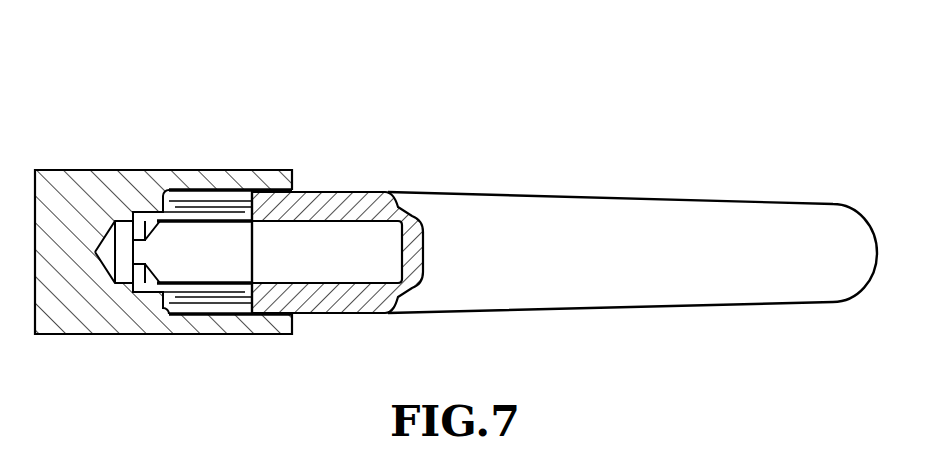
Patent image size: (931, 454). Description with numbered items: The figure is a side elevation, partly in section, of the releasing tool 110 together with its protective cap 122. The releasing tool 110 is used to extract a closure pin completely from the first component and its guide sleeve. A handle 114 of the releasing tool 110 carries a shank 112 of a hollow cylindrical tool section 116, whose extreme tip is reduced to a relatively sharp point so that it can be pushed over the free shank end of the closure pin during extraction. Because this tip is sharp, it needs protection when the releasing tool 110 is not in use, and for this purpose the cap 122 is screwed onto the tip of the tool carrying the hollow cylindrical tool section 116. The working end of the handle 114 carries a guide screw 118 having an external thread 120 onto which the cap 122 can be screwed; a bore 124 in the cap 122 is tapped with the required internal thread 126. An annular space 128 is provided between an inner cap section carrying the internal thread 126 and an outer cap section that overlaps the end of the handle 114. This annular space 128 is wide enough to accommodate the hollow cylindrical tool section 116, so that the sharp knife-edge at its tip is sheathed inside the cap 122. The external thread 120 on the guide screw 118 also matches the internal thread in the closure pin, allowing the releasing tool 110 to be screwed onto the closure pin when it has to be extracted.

The releasing tool 110 is at (456, 218).
The shank 112 is at (380, 187).
The handle 114 is at (598, 207).
The hollow cylindrical tool section 116 is at (215, 308).
The guide screw 118 is at (180, 263).
The external thread 120 is at (185, 210).
The cap 122 is at (92, 187).
The bore 124 is at (222, 210).
The internal thread 126 is at (178, 303).
The annular space 128 is at (235, 312).